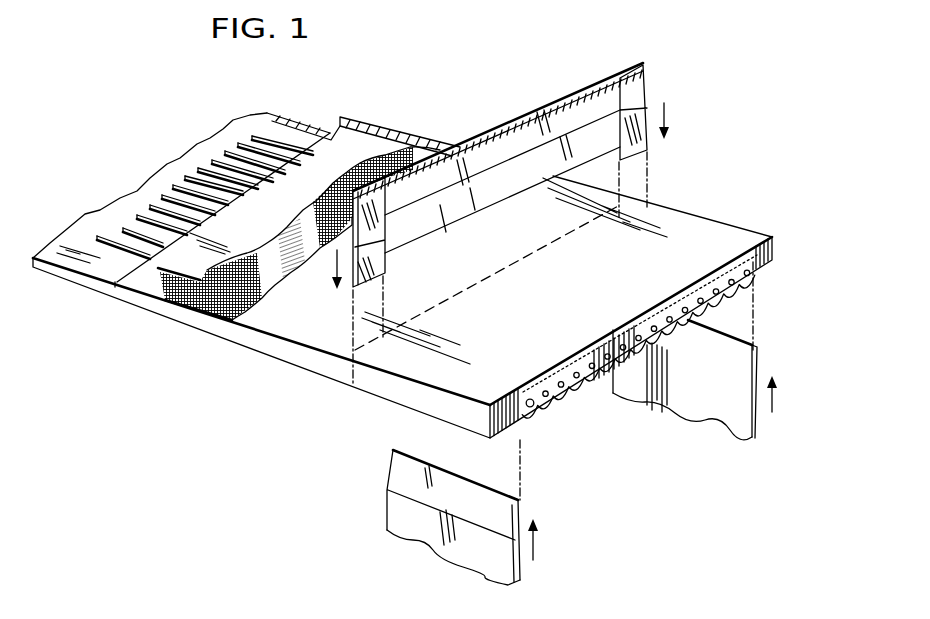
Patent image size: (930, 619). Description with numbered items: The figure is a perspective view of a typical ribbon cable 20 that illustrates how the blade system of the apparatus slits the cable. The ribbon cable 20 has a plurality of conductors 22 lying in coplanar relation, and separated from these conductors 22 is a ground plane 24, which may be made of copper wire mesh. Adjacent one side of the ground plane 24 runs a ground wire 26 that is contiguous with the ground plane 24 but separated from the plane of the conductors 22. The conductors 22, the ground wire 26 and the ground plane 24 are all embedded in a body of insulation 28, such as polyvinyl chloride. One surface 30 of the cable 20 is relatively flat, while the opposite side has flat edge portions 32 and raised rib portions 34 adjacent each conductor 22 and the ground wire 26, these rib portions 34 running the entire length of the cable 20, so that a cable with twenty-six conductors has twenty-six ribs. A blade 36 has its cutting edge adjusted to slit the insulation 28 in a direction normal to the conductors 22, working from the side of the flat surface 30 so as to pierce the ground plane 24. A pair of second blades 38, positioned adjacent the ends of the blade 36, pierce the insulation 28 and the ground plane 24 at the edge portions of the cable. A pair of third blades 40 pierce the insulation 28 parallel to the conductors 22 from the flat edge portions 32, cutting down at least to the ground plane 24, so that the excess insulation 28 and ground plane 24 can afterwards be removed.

The ribbon cable 20 is at (778, 194).
The conductors 22 is at (213, 157).
The ground plane 24 is at (396, 155).
The ground wire 26 is at (150, 283).
The body of insulation 28 is at (316, 363).
The surface 30 is at (287, 313).
The flat edge portions 32 is at (393, 408).
The raised rib portions 34 is at (577, 385).
The blade 36 is at (537, 130).
The second blades 38 is at (373, 223).
The third blades 40 is at (387, 510).